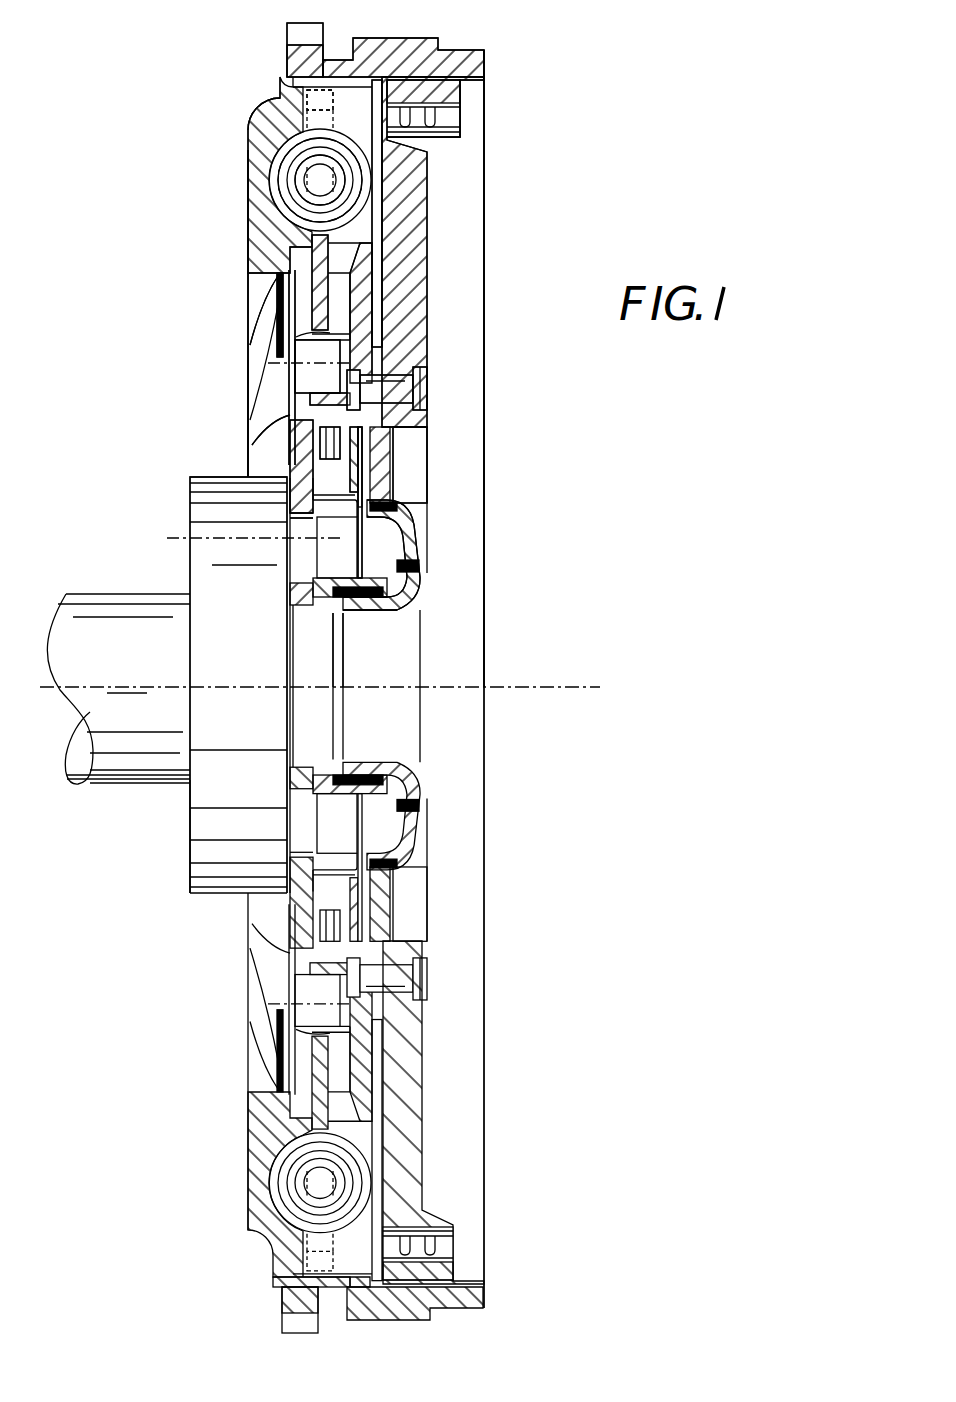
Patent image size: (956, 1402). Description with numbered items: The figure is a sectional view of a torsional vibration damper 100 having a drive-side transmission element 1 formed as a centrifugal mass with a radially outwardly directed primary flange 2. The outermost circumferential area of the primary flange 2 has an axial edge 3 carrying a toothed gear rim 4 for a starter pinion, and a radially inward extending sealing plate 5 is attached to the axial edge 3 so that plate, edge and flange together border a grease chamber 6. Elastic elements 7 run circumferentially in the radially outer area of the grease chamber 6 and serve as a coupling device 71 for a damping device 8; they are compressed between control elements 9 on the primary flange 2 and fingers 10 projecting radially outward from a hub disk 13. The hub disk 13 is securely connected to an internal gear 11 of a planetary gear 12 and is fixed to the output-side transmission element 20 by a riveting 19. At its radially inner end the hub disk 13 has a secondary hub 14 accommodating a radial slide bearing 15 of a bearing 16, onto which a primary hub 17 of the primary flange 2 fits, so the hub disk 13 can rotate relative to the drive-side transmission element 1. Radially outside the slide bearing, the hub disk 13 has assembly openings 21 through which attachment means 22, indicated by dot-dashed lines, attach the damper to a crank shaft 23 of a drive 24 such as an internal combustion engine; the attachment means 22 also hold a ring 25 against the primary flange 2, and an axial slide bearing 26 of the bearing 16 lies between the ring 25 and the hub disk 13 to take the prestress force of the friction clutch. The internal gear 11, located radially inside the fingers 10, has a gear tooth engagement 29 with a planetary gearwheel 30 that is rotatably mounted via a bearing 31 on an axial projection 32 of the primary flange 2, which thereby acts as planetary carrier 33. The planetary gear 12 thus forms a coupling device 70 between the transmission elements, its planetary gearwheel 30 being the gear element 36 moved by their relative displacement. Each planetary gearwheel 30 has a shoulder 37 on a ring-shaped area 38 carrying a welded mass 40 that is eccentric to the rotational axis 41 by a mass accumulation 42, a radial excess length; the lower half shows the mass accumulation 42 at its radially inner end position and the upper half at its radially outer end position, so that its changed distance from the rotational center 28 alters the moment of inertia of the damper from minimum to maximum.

The torsional vibration damper 100 is at (114, 196).
The drive-side transmission element 1 is at (241, 270).
The primary flange 2 is at (250, 245).
The axial edge 3 is at (337, 67).
The toothed gear rim 4 is at (290, 57).
The sealing plate 5 is at (433, 193).
The grease chamber 6 is at (295, 447).
The elastic elements 7 is at (265, 215).
The damping device 8 is at (290, 145).
The control elements 9 is at (275, 182).
The fingers 10 is at (315, 105).
The internal gear 11 is at (484, 226).
The planetary gear 12 is at (400, 258).
The hub disk 13 is at (375, 330).
The secondary hub 14 is at (372, 603).
The radial slide bearing 15 is at (415, 580).
The bearing 16 is at (385, 508).
The primary hub 17 is at (315, 597).
The riveting 19 is at (425, 385).
The output-side transmission element 20 is at (436, 167).
The assembly openings 21 is at (415, 553).
The attachment means 22 is at (185, 537).
The crank shaft 23 is at (72, 628).
The drive 24 is at (180, 796).
The ring 25 is at (395, 455).
The axial slide bearing 26 is at (400, 480).
The rotational center 28 is at (600, 686).
The gear tooth engagement 29 is at (353, 283).
The planetary gearwheel 30 is at (236, 418).
The bearing 31 is at (290, 418).
The axial projection 32 is at (300, 450).
The planetary carrier 33 is at (265, 383).
The gear element 36 is at (365, 372).
The shoulder 37 is at (342, 458).
The ring-shaped area 38 is at (287, 527).
The mass 40 is at (277, 338).
The rotational axis 41 is at (235, 395).
The mass accumulation 42 is at (283, 300).
The coupling device 70 is at (433, 425).
The coupling device 71 is at (262, 112).